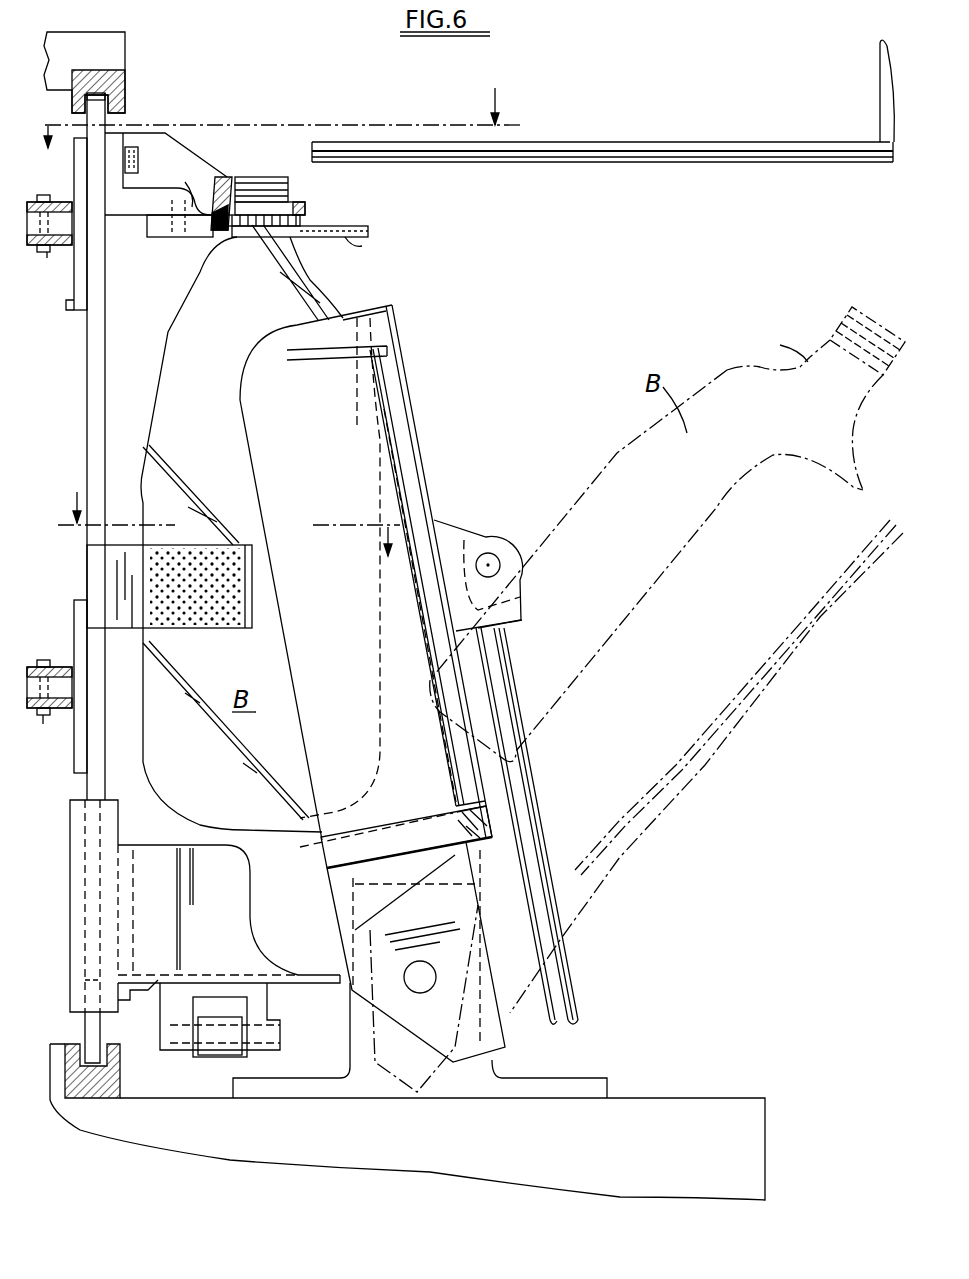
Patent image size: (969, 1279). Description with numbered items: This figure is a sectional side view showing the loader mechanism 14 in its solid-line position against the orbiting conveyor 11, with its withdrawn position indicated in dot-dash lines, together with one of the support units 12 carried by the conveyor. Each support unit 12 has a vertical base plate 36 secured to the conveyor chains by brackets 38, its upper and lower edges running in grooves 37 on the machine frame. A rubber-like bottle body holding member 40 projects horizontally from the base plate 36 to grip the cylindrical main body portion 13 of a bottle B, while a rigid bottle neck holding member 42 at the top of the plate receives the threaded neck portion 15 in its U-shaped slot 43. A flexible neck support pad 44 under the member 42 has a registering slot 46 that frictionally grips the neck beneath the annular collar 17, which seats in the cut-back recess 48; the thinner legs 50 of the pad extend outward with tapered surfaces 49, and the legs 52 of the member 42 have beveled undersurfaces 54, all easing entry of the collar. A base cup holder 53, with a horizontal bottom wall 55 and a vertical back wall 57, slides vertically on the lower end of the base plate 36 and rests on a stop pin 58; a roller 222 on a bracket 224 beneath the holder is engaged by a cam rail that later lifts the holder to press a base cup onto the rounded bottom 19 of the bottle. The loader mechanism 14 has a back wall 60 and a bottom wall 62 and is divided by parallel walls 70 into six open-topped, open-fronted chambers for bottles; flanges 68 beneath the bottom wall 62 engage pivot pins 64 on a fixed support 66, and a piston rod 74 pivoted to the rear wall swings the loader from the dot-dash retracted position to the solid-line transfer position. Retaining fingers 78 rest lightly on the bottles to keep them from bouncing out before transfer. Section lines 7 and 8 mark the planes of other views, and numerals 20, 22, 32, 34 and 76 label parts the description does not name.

The section line 7- 7 is at (271, 118).
The section line 8- 8 is at (229, 526).
The orbiting conveyor 11 is at (85, 7).
The support unit 12 is at (163, 124).
The cylindrical main body portion 13 is at (577, 500).
The loader mechanism 14 is at (413, 328).
The neck portion 15 is at (778, 346).
The annular collar 17 is at (265, 240).
The bottom 19 is at (152, 803).
The mounting bolt 20 is at (47, 220).
The mounting bolt 22 is at (65, 673).
The nut 32 is at (53, 269).
The nut 34 is at (53, 734).
The vertical base plate 36 is at (83, 790).
The grooves 37 is at (97, 90).
The brackets 38 is at (80, 308).
The bottle body holding member 40 is at (213, 617).
The bottle neck holding member 42 is at (182, 177).
The U-shaped slot 43 is at (235, 180).
The neck support pad 44 is at (158, 230).
The U-shaped slot 46 is at (235, 227).
The U-shaped recess 48 is at (173, 186).
The tapered upper surfaces 49 is at (368, 226).
The legs 50 is at (366, 249).
The legs 52 is at (300, 192).
The base cup holder 53 is at (245, 906).
The beveled undersurfaces 54 is at (307, 205).
The horizontal bottom wall 55 is at (312, 986).
The vertical back wall 57 is at (135, 900).
The pin 58 is at (135, 990).
The back wall 60 is at (397, 440).
The bottom wall 62 is at (327, 860).
The pivot pins 64 is at (423, 968).
The fixed support 66 is at (472, 1088).
The flanges 68 is at (422, 1020).
The parallel walls 70 is at (243, 394).
The rod 74 is at (527, 817).
The pivot 76 is at (489, 560).
The retaining fingers 78 is at (641, 150).
The rollers 222 is at (220, 1052).
The brackets 224 is at (173, 1007).